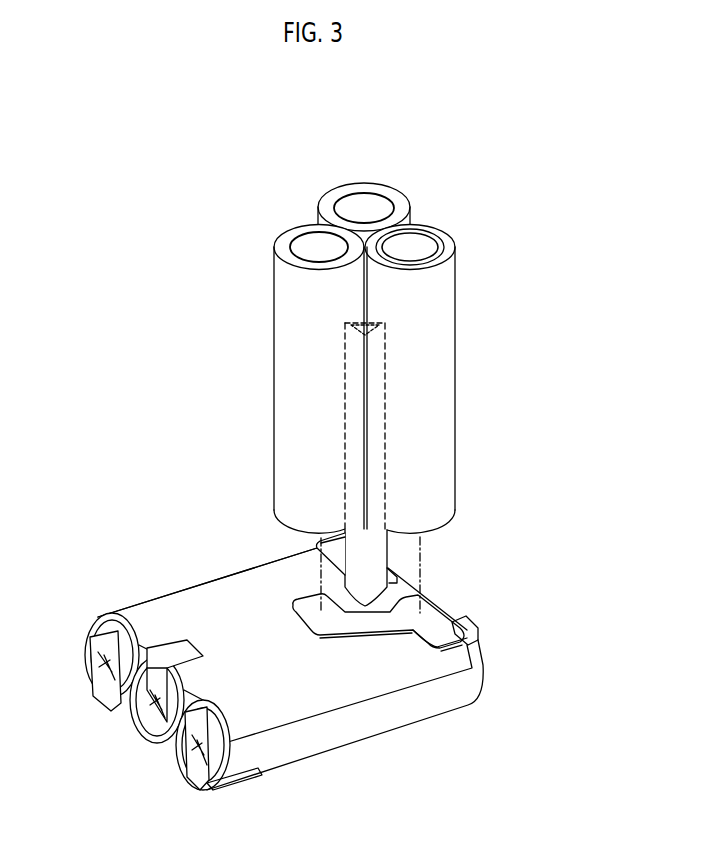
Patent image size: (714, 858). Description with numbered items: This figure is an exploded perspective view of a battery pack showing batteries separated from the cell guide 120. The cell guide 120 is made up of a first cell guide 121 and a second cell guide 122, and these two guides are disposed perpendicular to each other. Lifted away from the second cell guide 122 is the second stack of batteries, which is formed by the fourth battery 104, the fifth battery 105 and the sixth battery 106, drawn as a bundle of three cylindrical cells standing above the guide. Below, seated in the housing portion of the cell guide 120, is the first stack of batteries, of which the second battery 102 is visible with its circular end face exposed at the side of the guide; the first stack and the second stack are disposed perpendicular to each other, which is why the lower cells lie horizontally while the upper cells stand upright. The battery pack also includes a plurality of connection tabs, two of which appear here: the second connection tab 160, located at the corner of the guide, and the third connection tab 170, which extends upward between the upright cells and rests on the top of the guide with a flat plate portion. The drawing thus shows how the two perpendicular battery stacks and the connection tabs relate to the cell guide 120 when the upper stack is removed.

The second battery 102 is at (303, 745).
The fourth battery 104 is at (290, 295).
The fifth battery 105 is at (448, 298).
The sixth battery 106 is at (392, 200).
The cell guide 120 is at (228, 572).
The first cell guide 121 is at (170, 598).
The second cell guide 122 is at (378, 548).
The second connection tab 160 is at (477, 623).
The third connection tab 170 is at (322, 533).